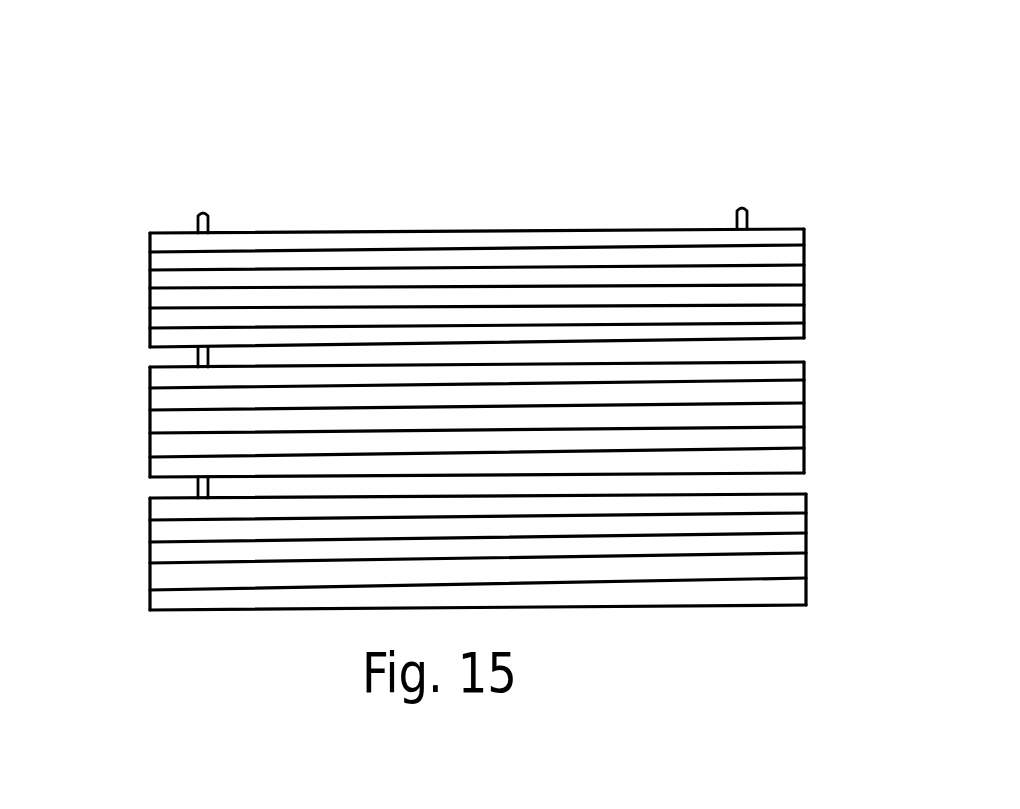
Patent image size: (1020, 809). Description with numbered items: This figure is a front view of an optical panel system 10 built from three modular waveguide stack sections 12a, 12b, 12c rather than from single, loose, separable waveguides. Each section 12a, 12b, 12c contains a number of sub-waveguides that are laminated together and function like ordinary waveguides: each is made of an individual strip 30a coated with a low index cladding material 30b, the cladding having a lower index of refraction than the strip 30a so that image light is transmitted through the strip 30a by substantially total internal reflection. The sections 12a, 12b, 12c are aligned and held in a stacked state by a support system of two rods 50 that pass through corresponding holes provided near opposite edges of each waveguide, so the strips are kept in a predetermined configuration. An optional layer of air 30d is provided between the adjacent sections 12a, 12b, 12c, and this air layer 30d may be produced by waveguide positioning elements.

The panel assembly 10 is at (566, 110).
The modular waveguide stack section 12a is at (537, 582).
The modular waveguide stack section 12b is at (822, 362).
The modular waveguide stack section 12c is at (820, 230).
The strip 30a is at (607, 595).
The low index cladding material 30b is at (717, 582).
The layer of air 30d is at (165, 357).
The rod 50 is at (195, 222).